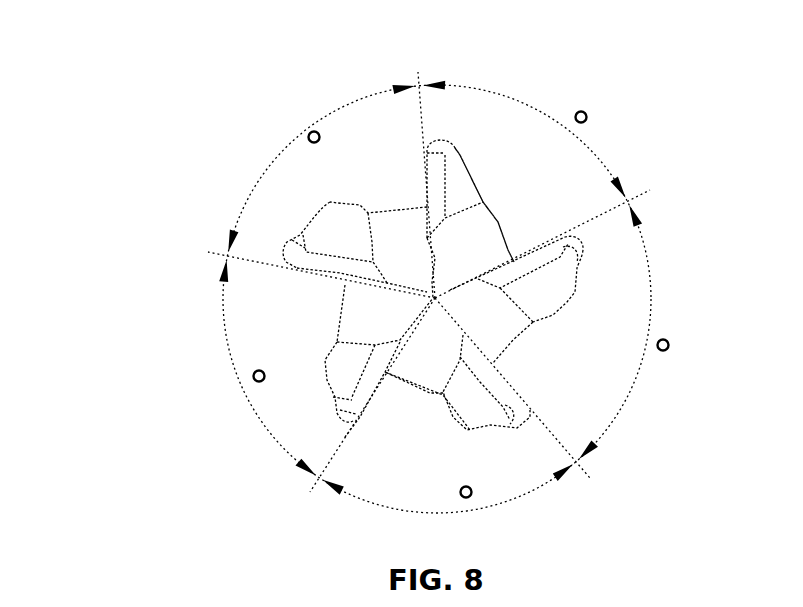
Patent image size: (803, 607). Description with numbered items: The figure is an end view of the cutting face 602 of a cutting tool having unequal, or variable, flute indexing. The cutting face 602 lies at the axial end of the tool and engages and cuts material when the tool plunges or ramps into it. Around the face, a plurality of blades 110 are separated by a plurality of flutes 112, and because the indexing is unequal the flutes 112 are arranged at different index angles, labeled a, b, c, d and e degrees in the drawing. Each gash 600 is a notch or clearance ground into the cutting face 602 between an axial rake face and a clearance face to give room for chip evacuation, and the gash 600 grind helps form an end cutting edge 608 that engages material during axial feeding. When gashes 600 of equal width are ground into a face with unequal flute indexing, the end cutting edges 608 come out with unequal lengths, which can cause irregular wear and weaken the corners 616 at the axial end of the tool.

The cutting face 602 is at (137, 181).
The end cutting edge 608 is at (427, 195).
The blade 110 is at (466, 186).
The gash 600 is at (481, 232).
The flute 112 is at (520, 223).
The corner 616 is at (333, 410).